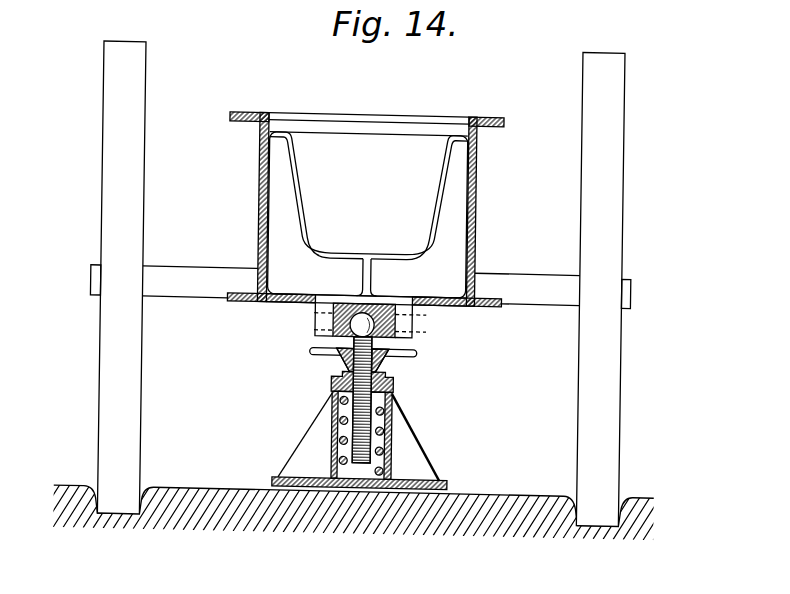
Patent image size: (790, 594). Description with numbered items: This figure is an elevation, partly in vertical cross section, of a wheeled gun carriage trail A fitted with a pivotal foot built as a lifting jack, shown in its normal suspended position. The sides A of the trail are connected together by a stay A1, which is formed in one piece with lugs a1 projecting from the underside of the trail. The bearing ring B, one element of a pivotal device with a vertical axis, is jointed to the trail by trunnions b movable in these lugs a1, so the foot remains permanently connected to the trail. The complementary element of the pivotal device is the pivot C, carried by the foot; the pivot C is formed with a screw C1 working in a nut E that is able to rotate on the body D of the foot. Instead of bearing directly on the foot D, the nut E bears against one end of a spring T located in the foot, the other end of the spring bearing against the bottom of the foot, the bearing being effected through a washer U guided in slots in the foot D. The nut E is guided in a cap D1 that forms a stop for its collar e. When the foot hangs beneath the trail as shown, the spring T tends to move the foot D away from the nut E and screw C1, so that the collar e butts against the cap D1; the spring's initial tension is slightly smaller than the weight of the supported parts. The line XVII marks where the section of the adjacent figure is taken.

The trail A is at (261, 200).
The stay A1 is at (441, 194).
The bearing ring B is at (382, 302).
The pivot C is at (362, 314).
The lugs a1 is at (411, 304).
The trunnions b is at (317, 326).
The cap D1 is at (398, 371).
The collar e is at (343, 372).
The nut E is at (377, 361).
The spring T is at (396, 436).
The washer U is at (397, 390).
The screw C1 is at (355, 398).
The body of the foot D is at (421, 458).
The section line XVII is at (356, 381).